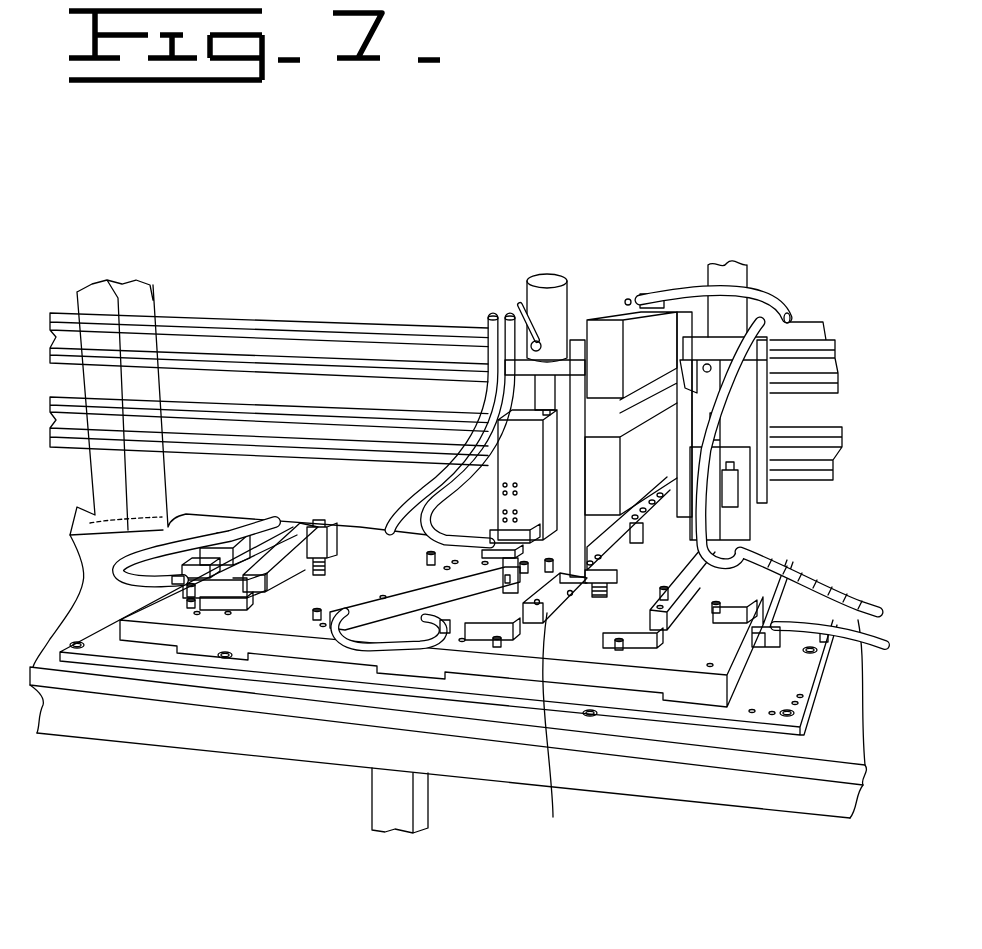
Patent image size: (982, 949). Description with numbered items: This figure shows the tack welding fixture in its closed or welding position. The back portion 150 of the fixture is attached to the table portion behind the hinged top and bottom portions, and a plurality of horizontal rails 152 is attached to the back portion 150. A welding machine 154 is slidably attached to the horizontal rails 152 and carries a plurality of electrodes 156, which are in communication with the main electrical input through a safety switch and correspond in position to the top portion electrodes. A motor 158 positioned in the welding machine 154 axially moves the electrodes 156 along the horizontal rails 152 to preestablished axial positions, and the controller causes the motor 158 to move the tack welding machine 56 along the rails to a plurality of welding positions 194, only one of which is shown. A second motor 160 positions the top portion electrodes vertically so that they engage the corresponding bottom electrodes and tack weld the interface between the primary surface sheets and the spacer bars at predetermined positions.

The welding positions 194 is at (425, 238).
The welding machine 154 is at (565, 225).
The tack welding machine 56 is at (528, 290).
The motor 158 is at (613, 303).
The back portion 150 is at (340, 322).
The horizontal rails 152 is at (358, 370).
The motor 160 is at (663, 468).
The electrodes 156 is at (503, 593).